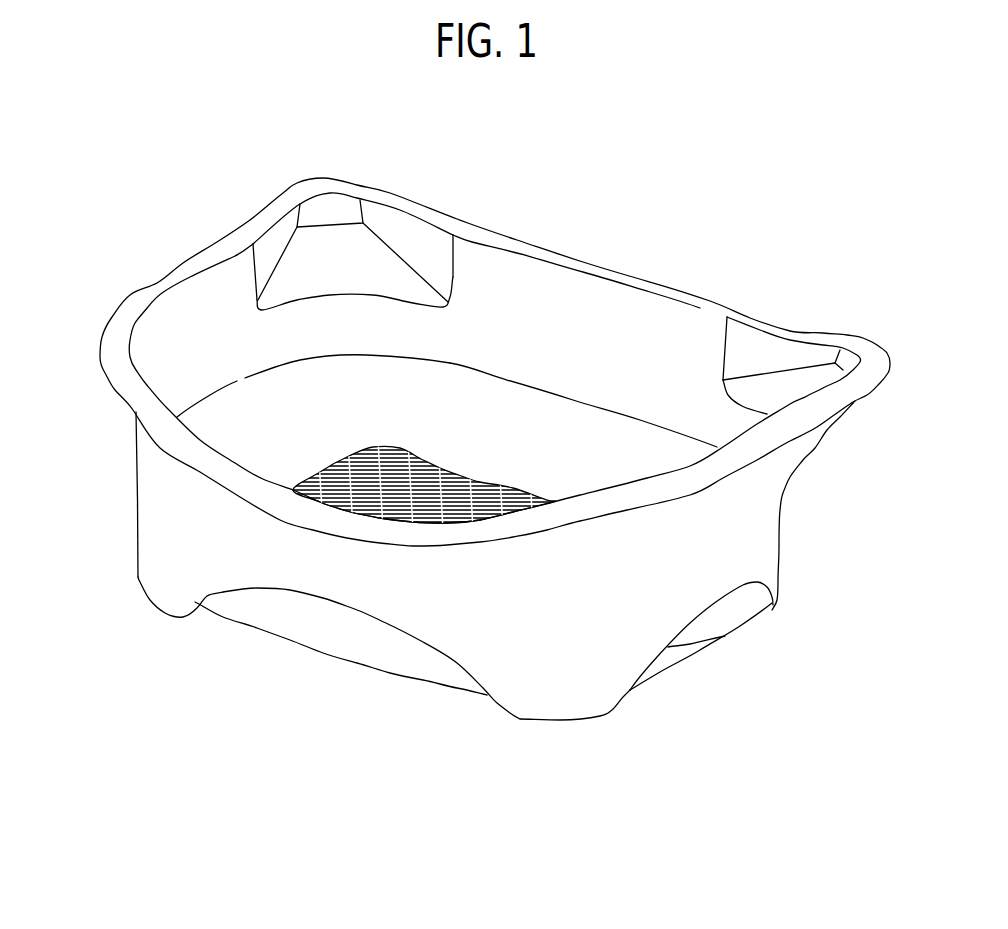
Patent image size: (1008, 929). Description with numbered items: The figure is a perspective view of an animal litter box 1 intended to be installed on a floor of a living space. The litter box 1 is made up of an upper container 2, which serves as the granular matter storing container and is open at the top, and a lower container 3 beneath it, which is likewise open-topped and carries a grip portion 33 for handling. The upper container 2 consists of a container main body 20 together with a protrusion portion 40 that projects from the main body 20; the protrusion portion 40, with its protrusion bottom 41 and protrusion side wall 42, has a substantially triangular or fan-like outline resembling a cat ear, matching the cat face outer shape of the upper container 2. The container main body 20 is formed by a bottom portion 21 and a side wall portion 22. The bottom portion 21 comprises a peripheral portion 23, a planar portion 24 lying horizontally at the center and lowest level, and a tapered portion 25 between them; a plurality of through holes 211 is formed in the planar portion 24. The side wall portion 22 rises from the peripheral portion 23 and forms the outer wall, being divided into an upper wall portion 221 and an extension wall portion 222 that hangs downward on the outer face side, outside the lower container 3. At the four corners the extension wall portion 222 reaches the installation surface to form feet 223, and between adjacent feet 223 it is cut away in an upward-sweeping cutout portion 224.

The animal litter box 1 is at (663, 177).
The upper container 2 is at (693, 290).
The lower container 3 is at (662, 683).
The container main body 20 is at (799, 532).
The bottom portion 21 is at (261, 393).
The through holes 211 is at (457, 490).
The side wall portion 22 is at (178, 337).
The upper wall portion 221 is at (140, 447).
The extension wall portion 222 is at (150, 537).
The feet 223 is at (150, 580).
The cutout portion 224 is at (328, 603).
The peripheral portion 23 is at (558, 402).
The planar portion 24 is at (426, 463).
The tapered portion 25 is at (287, 437).
The grip portion 33 is at (737, 617).
The protrusion portion 40 is at (787, 345).
The protrusion bottom 41 is at (370, 253).
The protrusion side wall 42 is at (278, 235).